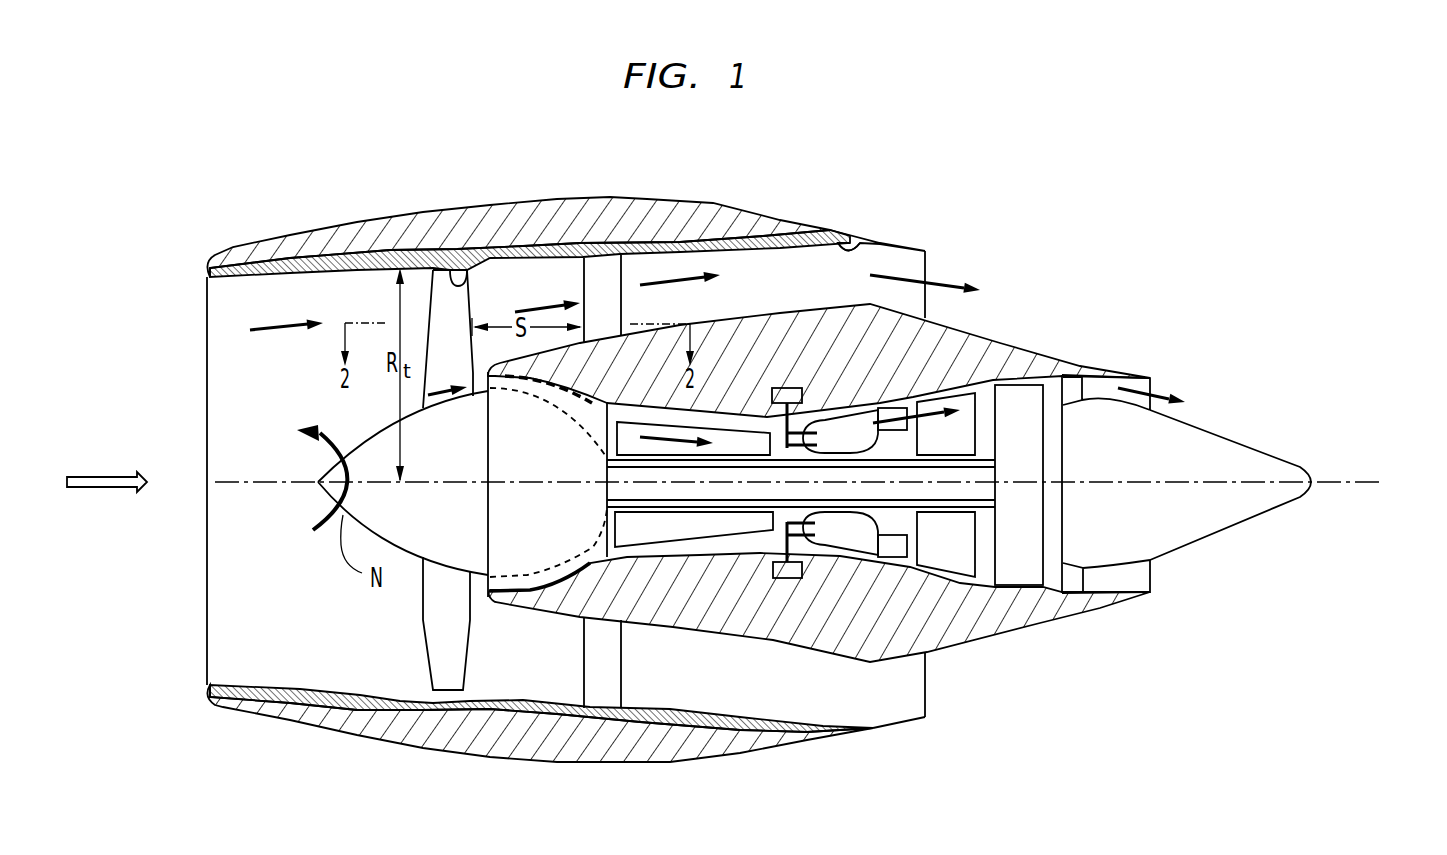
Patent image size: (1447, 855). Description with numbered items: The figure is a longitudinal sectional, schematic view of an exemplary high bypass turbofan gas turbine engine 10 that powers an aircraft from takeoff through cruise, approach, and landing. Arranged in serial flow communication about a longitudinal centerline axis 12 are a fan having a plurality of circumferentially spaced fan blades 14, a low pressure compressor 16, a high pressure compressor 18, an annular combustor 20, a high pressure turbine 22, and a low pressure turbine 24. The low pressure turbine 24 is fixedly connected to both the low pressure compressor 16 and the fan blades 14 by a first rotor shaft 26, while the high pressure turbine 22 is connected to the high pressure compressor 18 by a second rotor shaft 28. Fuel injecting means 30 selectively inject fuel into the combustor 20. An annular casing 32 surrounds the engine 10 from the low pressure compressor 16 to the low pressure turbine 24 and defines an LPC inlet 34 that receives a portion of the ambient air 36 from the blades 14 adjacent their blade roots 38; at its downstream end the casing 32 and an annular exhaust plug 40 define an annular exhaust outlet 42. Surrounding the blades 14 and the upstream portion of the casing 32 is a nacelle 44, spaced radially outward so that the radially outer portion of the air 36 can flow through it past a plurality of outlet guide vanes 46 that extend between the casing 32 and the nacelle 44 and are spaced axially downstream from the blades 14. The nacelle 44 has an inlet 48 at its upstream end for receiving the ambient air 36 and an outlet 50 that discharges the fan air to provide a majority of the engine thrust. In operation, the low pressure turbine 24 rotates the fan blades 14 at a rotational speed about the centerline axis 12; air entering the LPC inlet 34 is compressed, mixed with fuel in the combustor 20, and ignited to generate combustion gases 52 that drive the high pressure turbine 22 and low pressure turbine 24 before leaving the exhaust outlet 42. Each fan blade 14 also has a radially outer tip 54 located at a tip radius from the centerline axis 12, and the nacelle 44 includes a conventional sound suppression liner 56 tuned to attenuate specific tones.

The gas turbine engine 10 is at (1042, 262).
The longitudinal centerline axis 12 is at (1363, 483).
The fan blades 14 is at (423, 652).
The low pressure compressor 16 is at (541, 543).
The high pressure compressor 18 is at (647, 539).
The annular combustor 20 is at (845, 543).
The high pressure turbine 22 is at (961, 553).
The low pressure turbine 24 is at (1031, 527).
The first rotor shaft 26 is at (992, 592).
The second rotor shaft 28 is at (783, 540).
The fuel injecting means 30 is at (779, 580).
The annular casing 32 is at (1010, 343).
The LPC inlet 34 is at (482, 592).
The ambient air 36 is at (100, 477).
The blade roots 38 is at (442, 555).
The annular exhaust plug 40 is at (1225, 437).
The annular exhaust outlet 42 is at (1152, 574).
The nacelle 44 is at (720, 198).
The outlet guide vanes 46 is at (610, 292).
The inlet 48 is at (205, 325).
The outlet 50 is at (927, 267).
The combustion gases 52 is at (927, 412).
The radially outer tip 54 is at (467, 283).
The sound suppression liner 56 is at (860, 237).